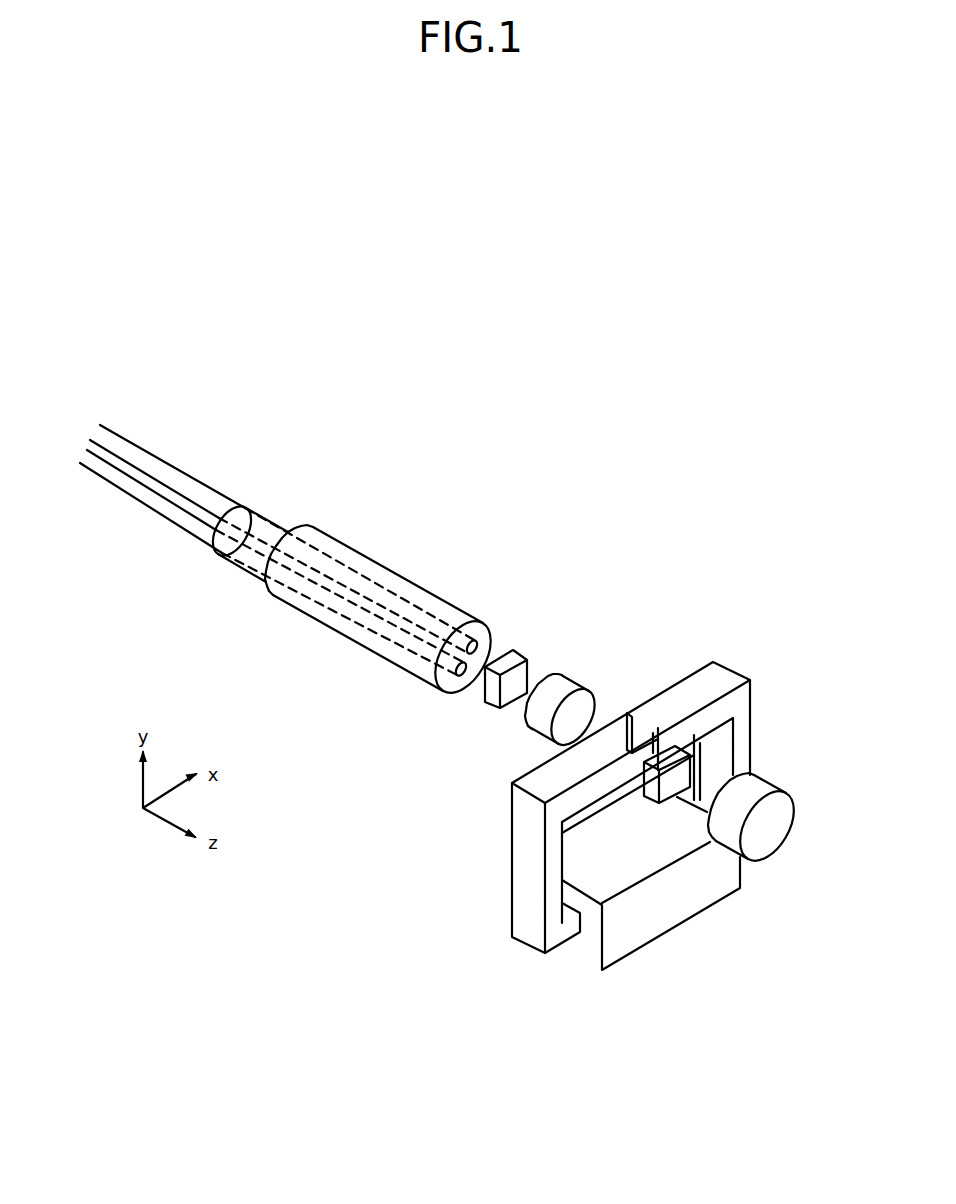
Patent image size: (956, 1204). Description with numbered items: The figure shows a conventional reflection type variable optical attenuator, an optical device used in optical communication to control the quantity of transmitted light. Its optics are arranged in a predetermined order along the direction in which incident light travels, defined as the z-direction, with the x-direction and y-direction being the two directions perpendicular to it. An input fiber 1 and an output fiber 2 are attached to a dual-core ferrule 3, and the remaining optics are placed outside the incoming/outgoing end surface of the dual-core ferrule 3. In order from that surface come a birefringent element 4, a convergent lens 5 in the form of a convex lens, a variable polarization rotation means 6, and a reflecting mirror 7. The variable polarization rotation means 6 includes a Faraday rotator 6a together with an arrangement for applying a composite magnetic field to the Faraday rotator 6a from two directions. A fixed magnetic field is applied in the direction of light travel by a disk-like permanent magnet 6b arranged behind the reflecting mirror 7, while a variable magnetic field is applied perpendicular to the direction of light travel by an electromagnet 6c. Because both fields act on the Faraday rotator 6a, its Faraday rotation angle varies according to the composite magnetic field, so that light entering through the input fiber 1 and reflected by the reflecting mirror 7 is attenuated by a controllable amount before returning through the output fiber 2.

The input fiber 1 is at (137, 485).
The output fiber 2 is at (178, 482).
The dual-core ferrule 3 is at (350, 624).
The birefringent element 4 is at (503, 662).
The convergent lens 5 is at (560, 688).
The variable polarization rotation means 6 is at (648, 785).
The Faraday rotator 6a is at (632, 731).
The permanent magnet 6b is at (768, 827).
The electromagnet 6c is at (521, 857).
The reflecting mirror 7 is at (677, 771).